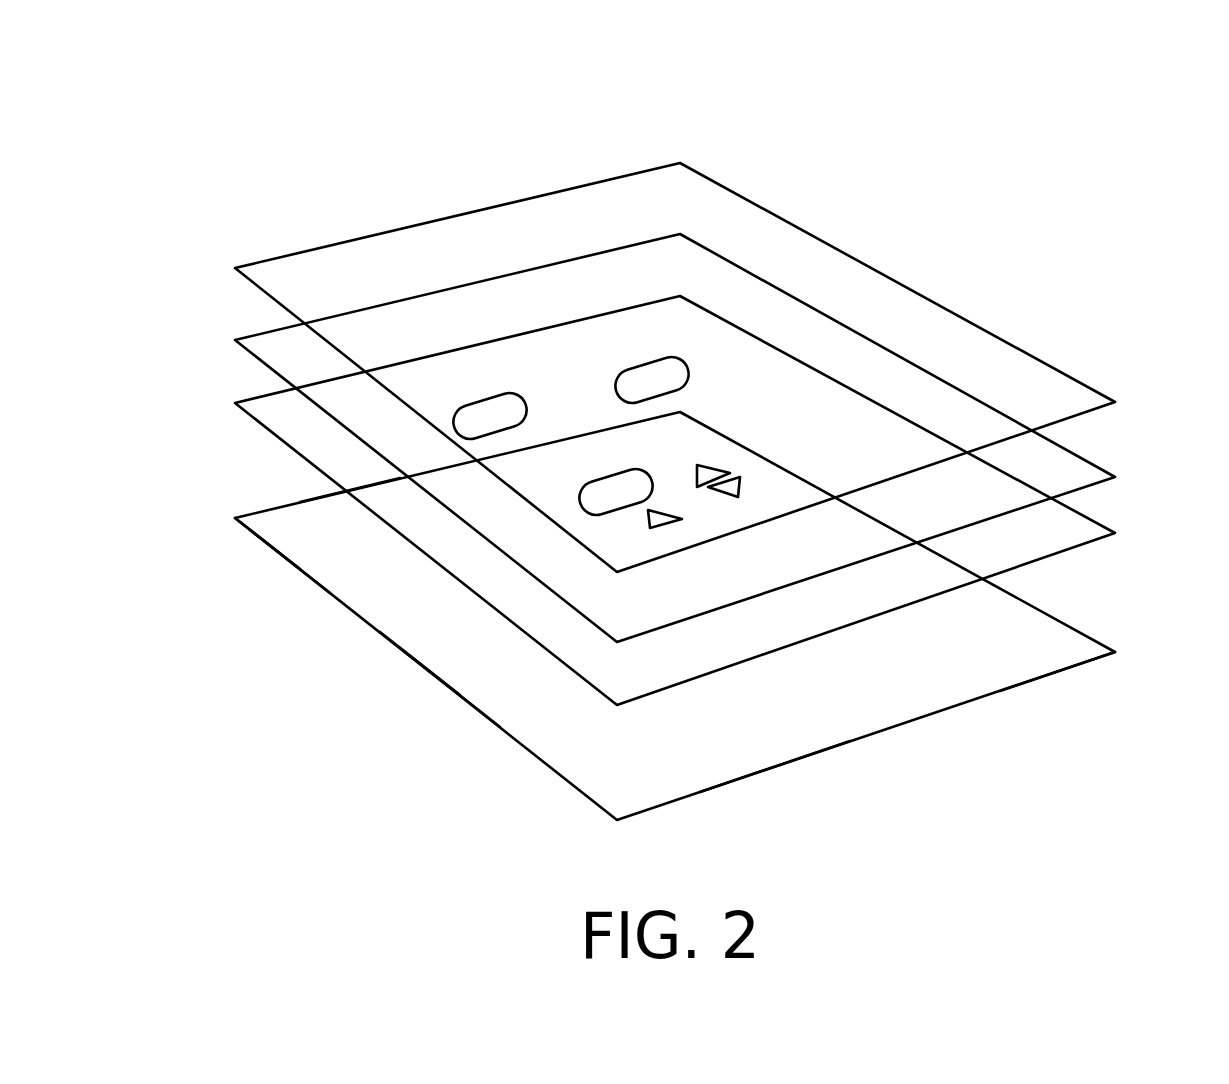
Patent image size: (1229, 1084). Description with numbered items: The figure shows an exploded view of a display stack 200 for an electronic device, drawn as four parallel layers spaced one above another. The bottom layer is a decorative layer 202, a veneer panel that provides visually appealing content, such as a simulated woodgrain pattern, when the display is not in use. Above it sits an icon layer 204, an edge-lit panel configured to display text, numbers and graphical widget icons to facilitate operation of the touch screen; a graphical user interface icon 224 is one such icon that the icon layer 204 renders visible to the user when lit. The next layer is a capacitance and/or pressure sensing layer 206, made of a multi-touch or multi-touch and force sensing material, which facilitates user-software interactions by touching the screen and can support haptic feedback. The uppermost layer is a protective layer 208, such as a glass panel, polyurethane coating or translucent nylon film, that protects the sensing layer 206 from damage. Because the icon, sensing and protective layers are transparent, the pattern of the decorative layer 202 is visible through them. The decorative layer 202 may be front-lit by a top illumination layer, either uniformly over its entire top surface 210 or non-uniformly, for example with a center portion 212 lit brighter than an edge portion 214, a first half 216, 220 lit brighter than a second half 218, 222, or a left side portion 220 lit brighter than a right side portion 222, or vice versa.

The stack 200 is at (232, 92).
The decorative layer 202 is at (1084, 638).
The icon layer 204 is at (1092, 525).
The capacitance and/or pressure sensing layer 206 is at (1115, 481).
The protective layer 208 is at (813, 271).
The top surface 210 is at (227, 534).
The center portion 212 is at (445, 618).
The edge portion 214 is at (325, 529).
The first half 216 is at (264, 594).
The second half 218 is at (424, 749).
The left side portion 220 is at (788, 820).
The right side portion 222 is at (1073, 703).
The graphical user interface icon 224 is at (475, 383).